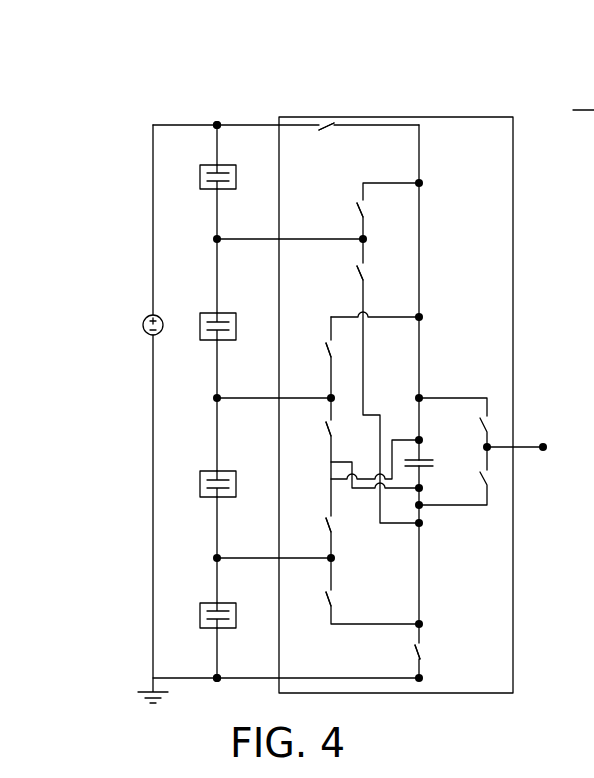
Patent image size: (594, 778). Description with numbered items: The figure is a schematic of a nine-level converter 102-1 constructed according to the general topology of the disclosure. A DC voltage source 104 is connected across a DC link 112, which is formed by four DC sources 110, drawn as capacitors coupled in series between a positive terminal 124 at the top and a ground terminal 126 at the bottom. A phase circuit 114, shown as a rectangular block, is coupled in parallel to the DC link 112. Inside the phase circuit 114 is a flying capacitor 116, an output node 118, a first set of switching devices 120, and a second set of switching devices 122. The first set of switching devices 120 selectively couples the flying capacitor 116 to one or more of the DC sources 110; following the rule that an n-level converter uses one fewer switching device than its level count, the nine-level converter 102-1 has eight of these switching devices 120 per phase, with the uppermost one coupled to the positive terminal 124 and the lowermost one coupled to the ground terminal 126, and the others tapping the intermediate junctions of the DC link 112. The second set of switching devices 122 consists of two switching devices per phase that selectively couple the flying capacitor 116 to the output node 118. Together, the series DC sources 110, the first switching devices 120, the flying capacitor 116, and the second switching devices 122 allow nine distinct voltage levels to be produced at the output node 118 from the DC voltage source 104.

The nine-level converter 102-1 is at (341, 65).
The DC voltage source 104 is at (161, 333).
The DC sources 110 is at (237, 397).
The DC link 112 is at (146, 268).
The phase circuit 114 is at (391, 117).
The flying capacitor 116 is at (433, 463).
The output node 118 is at (548, 442).
The first set of switching devices 120 is at (365, 400).
The second set of switching devices 122 is at (455, 451).
The positive terminal 124 is at (219, 123).
The ground terminal 126 is at (220, 681).